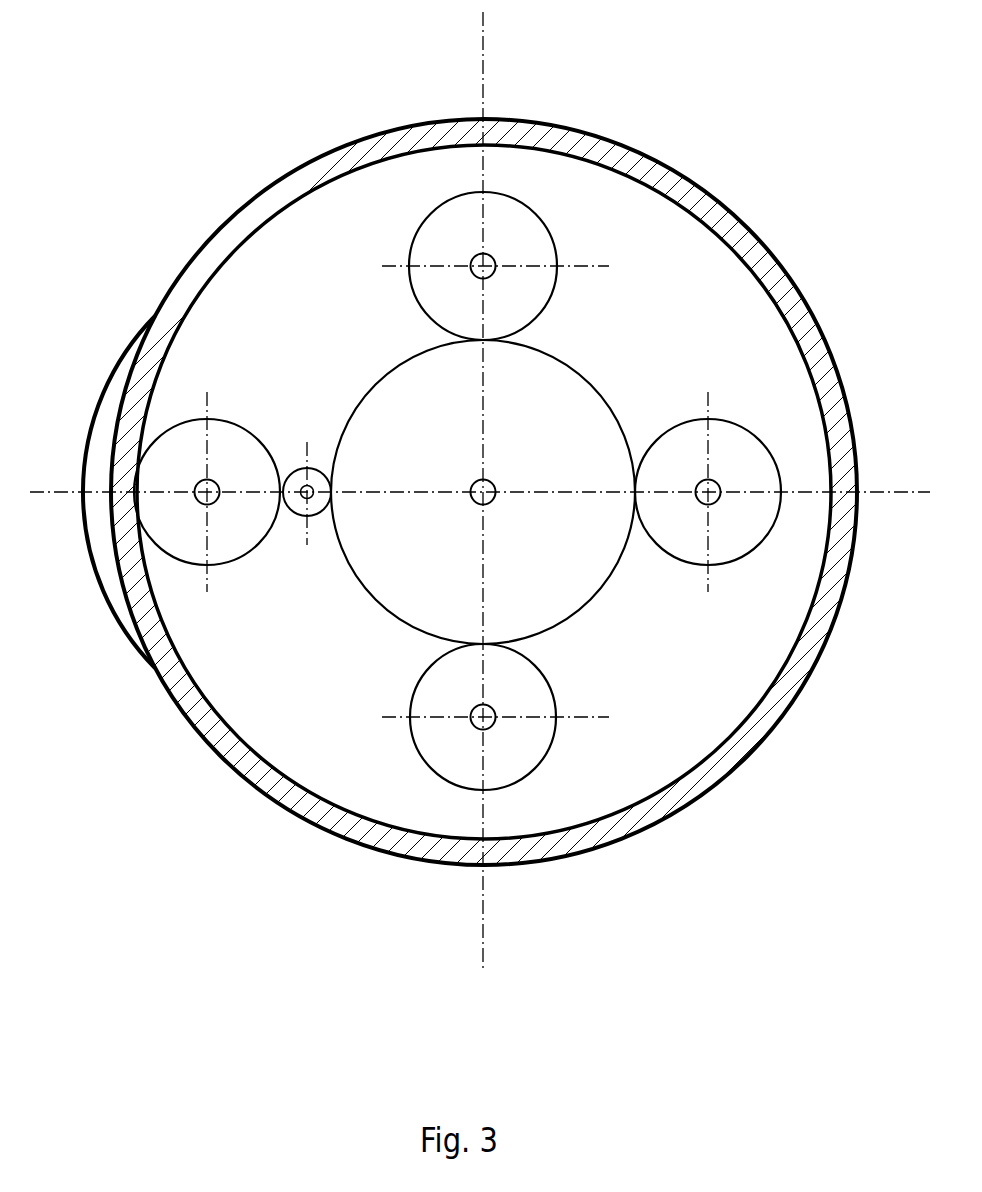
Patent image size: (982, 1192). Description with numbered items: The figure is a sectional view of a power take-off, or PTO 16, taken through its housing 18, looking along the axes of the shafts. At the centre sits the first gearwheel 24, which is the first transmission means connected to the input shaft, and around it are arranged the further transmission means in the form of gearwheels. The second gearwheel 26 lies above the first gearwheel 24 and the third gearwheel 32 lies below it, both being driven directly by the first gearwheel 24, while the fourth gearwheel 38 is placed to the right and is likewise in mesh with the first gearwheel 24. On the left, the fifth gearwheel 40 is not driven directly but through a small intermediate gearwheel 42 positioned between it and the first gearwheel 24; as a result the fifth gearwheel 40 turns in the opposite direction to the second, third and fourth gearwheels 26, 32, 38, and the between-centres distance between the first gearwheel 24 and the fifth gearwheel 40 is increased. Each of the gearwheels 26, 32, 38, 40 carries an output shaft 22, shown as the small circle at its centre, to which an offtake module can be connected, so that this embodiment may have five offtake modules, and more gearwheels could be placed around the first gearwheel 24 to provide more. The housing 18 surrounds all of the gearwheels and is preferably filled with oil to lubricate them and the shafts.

The power take-off 16 is at (558, 70).
The housing 18 is at (240, 208).
The output shaft 22 is at (495, 257).
The first gearwheel 24 is at (369, 387).
The second gearwheel 26 is at (409, 260).
The third gearwheel 32 is at (410, 710).
The fourth gearwheel 38 is at (672, 423).
The fifth gearwheel 40 is at (246, 427).
The intermediate gearwheel 42 is at (318, 467).